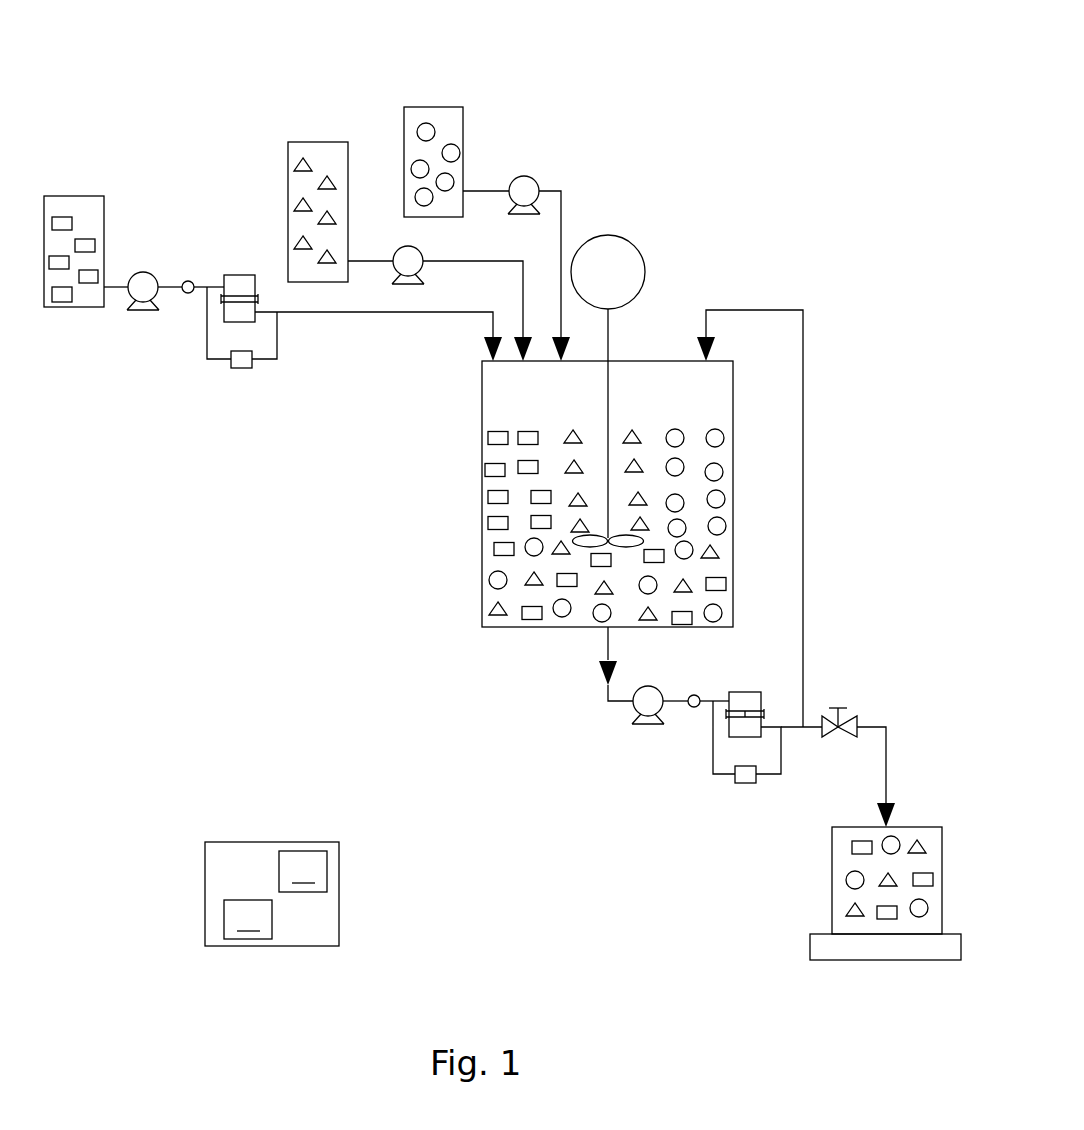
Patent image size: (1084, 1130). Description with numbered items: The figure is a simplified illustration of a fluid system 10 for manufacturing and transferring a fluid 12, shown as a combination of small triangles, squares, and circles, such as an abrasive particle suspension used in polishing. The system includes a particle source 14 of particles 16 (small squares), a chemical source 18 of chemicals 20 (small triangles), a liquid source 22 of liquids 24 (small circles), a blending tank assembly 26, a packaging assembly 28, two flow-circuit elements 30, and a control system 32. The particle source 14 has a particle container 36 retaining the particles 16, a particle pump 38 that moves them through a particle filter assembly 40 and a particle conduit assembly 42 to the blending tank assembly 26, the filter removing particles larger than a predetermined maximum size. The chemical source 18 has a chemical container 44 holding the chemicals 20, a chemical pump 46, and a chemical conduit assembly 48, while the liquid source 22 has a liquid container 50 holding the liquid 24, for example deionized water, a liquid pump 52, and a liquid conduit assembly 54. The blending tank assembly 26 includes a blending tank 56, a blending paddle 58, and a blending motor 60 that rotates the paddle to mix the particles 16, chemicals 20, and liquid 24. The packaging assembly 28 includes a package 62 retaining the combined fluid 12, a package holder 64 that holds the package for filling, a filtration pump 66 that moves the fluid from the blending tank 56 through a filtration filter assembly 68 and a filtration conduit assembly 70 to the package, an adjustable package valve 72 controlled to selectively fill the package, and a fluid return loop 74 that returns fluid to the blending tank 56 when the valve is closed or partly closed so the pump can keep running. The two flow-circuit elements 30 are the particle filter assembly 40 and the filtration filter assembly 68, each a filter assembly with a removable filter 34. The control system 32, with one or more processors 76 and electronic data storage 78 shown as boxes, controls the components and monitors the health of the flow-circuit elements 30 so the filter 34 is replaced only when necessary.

The fluid system 10 is at (743, 142).
The fluid 12 is at (846, 877).
The particle source 14 is at (70, 172).
The particles 16 is at (62, 302).
The chemical source 18 is at (309, 118).
The chemicals 20 is at (328, 175).
The liquid source 22 is at (430, 83).
The liquids 24 is at (451, 144).
The blending tank assembly 26 is at (462, 584).
The packaging assembly 28 is at (827, 917).
The flow-circuit element 30 is at (503, 462).
The control system 32 is at (230, 818).
The filter 34 is at (748, 712).
The particle container 36 is at (97, 196).
The particle pump 38 is at (143, 302).
The particle filter assembly 40 is at (248, 275).
The particle conduit assembly 42 is at (361, 312).
The chemical container 44 is at (288, 142).
The chemical pump 46 is at (398, 250).
The chemical conduit assembly 48 is at (457, 261).
The liquid container 50 is at (463, 123).
The liquid pump 52 is at (526, 176).
The liquid conduit assembly 54 is at (561, 200).
The blending tank 56 is at (482, 395).
The blending paddle 58 is at (595, 541).
The blending motor 60 is at (622, 258).
The package 62 is at (832, 838).
The package holder 64 is at (867, 950).
The filtration pump 66 is at (645, 710).
The filtration filter assembly 68 is at (730, 697).
The filtration conduit assembly 70 is at (886, 762).
The package valve 72 is at (850, 716).
The fluid return loop 74 is at (803, 603).
The processor 76 is at (248, 919).
The electronic data storage 78 is at (303, 871).